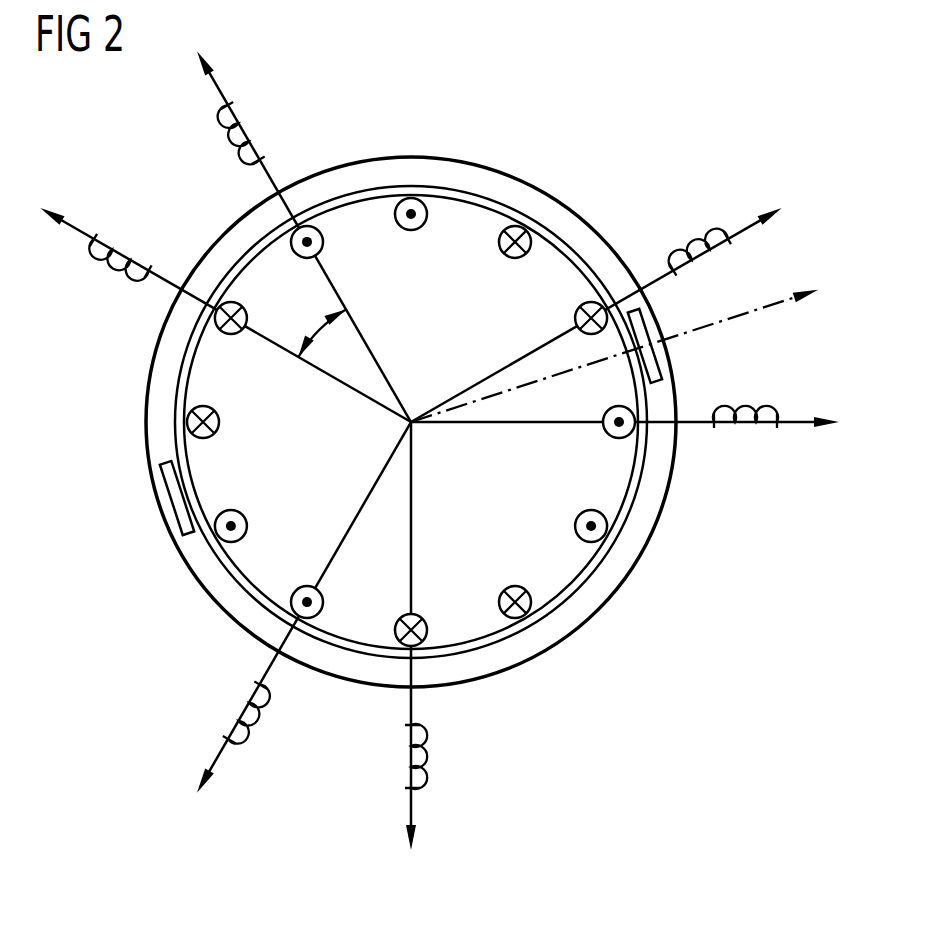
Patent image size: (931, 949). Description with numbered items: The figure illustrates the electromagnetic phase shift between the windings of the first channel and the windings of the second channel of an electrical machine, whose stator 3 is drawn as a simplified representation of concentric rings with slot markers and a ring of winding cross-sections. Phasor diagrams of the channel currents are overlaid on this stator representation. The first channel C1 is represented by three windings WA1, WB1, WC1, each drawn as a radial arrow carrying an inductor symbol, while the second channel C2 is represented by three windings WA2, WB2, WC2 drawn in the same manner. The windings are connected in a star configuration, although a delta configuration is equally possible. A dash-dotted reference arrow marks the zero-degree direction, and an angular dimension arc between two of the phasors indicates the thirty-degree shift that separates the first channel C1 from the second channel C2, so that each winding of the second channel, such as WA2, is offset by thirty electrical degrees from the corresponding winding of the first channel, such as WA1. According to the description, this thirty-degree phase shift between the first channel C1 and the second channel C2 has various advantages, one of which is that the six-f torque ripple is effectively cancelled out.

The electric machine stator 3 is at (625, 113).
The first channel C1 is at (411, 350).
The second channel C2 is at (411, 422).
The winding WA1 is at (428, 763).
The winding WA2 is at (230, 147).
The winding WB1 is at (699, 240).
The winding WB2 is at (255, 724).
The winding WC1 is at (108, 259).
The winding WC2 is at (752, 404).